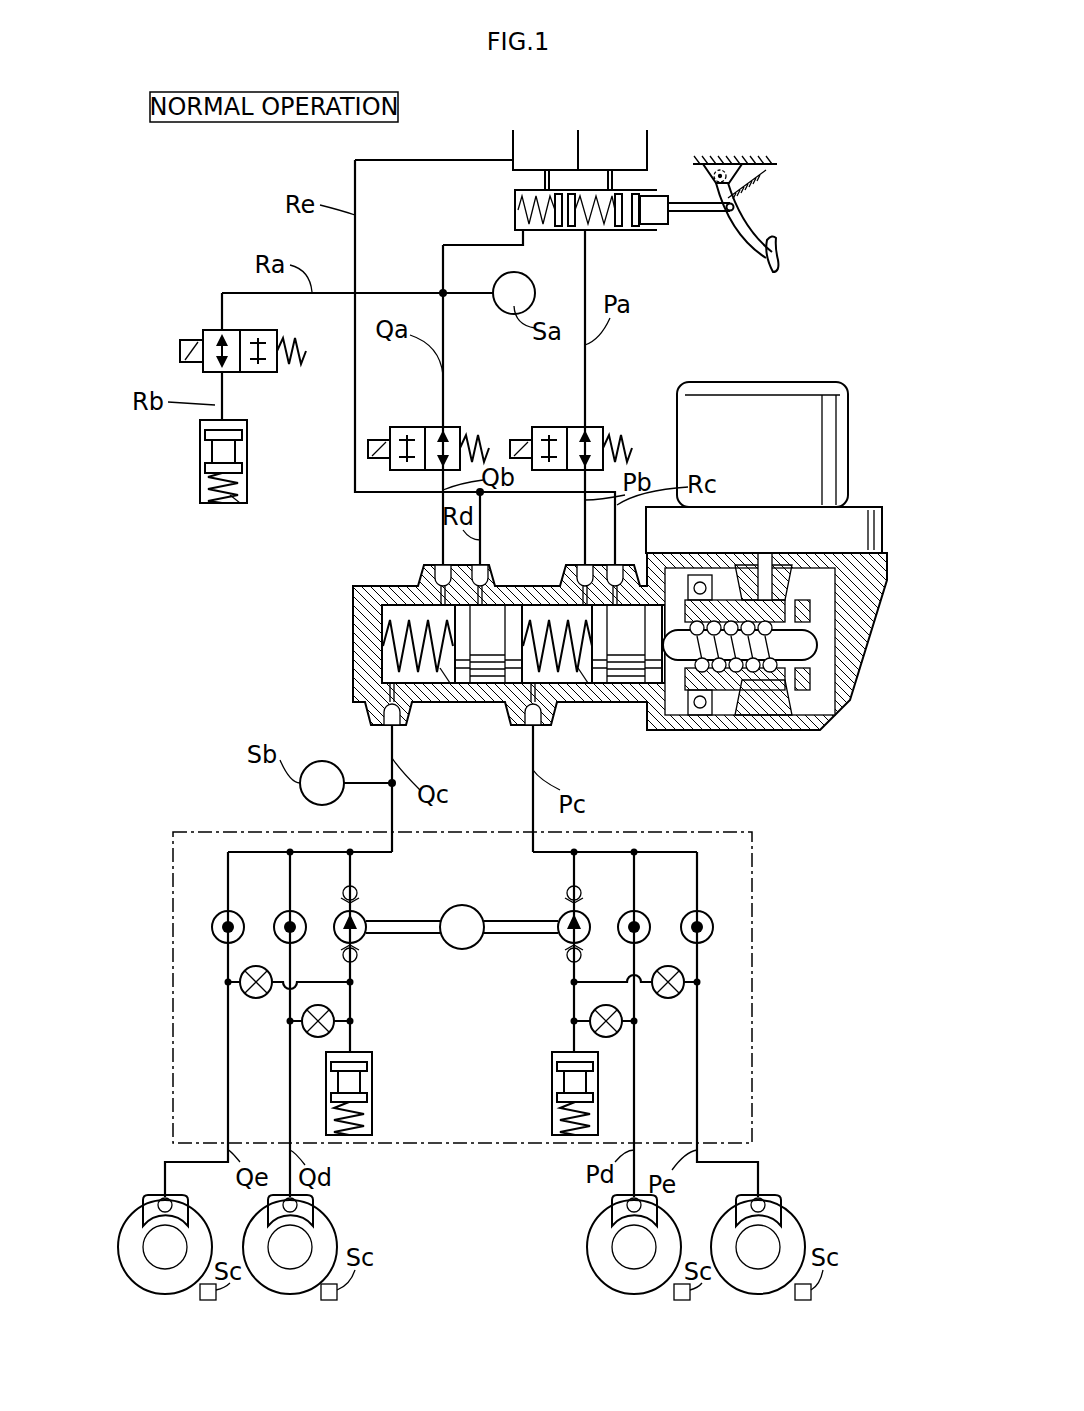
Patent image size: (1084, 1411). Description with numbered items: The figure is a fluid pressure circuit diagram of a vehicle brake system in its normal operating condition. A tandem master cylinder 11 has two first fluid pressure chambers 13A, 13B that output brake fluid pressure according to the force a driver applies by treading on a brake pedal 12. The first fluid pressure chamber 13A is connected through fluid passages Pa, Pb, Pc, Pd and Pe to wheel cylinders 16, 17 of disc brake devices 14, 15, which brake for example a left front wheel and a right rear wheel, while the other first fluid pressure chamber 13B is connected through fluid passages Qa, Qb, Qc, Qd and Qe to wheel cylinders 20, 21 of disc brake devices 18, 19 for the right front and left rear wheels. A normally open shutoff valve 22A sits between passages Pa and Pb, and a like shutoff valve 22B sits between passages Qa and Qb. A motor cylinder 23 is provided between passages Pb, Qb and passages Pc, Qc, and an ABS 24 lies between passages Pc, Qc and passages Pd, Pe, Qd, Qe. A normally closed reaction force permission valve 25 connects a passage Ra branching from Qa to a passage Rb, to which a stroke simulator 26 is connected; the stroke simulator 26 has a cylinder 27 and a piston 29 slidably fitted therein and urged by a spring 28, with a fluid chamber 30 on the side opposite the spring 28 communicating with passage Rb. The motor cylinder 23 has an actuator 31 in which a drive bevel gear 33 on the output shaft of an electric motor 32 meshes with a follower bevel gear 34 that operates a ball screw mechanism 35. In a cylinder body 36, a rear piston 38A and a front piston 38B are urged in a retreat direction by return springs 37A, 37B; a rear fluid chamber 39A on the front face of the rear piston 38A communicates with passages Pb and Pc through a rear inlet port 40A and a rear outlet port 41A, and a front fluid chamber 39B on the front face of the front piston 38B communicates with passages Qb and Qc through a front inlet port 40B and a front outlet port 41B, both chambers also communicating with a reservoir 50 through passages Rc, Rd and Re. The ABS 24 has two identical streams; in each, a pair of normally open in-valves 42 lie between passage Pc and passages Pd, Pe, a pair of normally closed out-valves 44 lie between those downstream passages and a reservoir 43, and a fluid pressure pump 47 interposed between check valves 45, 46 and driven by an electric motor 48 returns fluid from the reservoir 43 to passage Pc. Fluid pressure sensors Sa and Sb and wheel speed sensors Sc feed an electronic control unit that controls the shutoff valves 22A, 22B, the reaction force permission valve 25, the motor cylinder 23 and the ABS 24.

The tandem master cylinder 11 is at (567, 234).
The brake pedal 12 is at (775, 258).
The first fluid pressure chamber 13A is at (605, 233).
The first fluid pressure chamber 13B is at (540, 233).
The disc brake device 14 is at (603, 1237).
The disc brake device 15 is at (792, 1221).
The wheel cylinder 16 is at (622, 1205).
The wheel cylinder 17 is at (770, 1205).
The disc brake device 18 is at (325, 1235).
The disc brake device 19 is at (138, 1220).
The wheel cylinder 20 is at (300, 1205).
The wheel cylinder 21 is at (157, 1205).
The shutoff valve 22A is at (588, 420).
The shutoff valve 22B is at (446, 420).
The motor cylinder 23 is at (605, 640).
The ABS 24 is at (615, 830).
The reaction force permission valve 25 is at (200, 342).
The stroke simulator 26 is at (247, 462).
The cylinder 27 is at (248, 482).
The spring 28 is at (237, 503).
The piston 29 is at (215, 450).
The fluid chamber 30 is at (233, 425).
The actuator 31 is at (746, 647).
The electric motor 32 is at (835, 475).
The drive bevel gear 33 is at (785, 578).
The follower bevel gear 34 is at (745, 700).
The ball screw mechanism 35 is at (713, 680).
The cylinder body 36 is at (522, 600).
The return spring 37A is at (568, 660).
The return spring 37B is at (430, 660).
The rear piston 38A is at (633, 632).
The front piston 38B is at (490, 622).
The rear fluid chamber 39A is at (547, 615).
The front fluid chamber 39B is at (400, 620).
The rear inlet port 40A is at (580, 566).
The front inlet port 40B is at (436, 566).
The rear outlet port 41A is at (533, 740).
The front outlet port 41B is at (390, 722).
The in-valve 42 is at (214, 924).
The reservoir 43 is at (376, 1100).
The out-valve 44 is at (255, 999).
The check valve 45 is at (357, 960).
The check valve 46 is at (357, 888).
The fluid pressure pump 47 is at (364, 918).
The electric motor 48 is at (458, 950).
The reservoir 50 is at (511, 148).